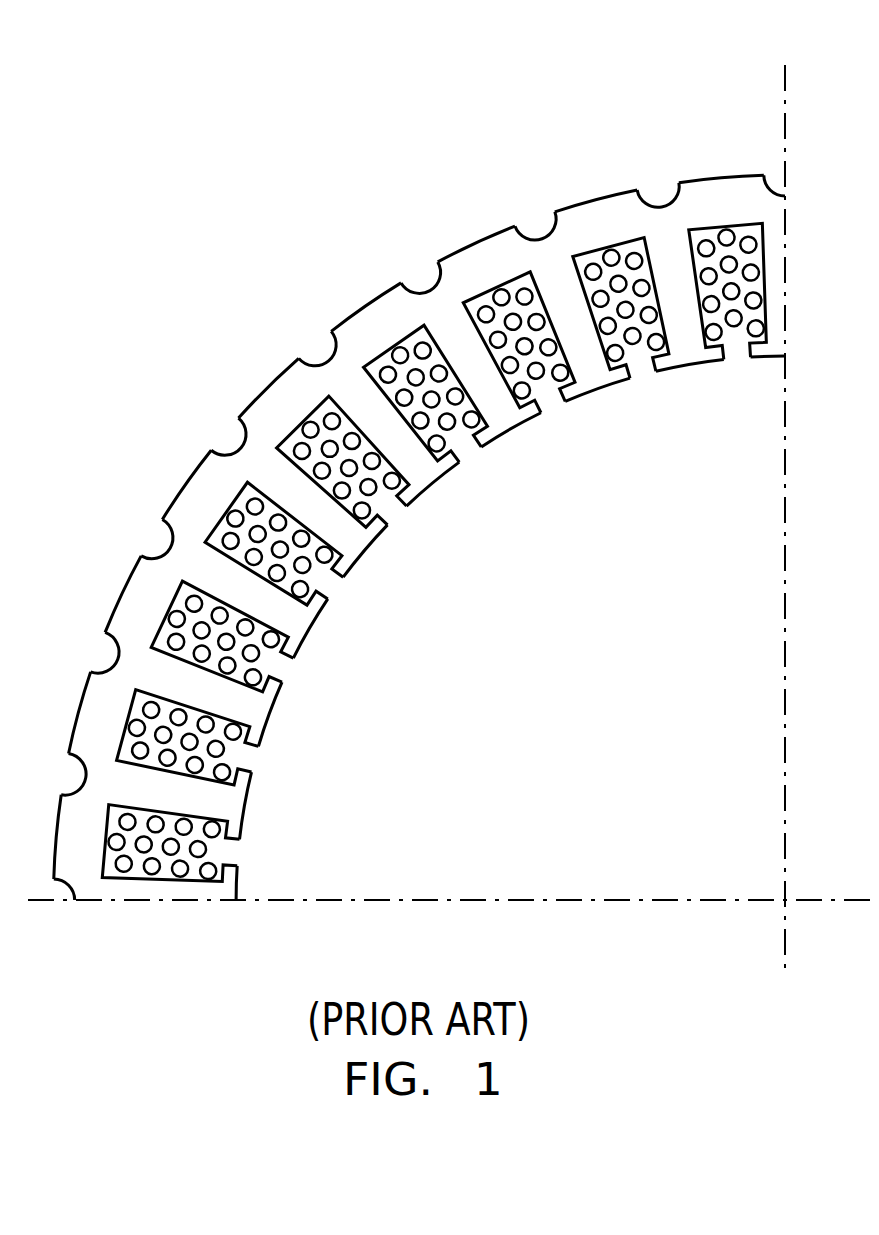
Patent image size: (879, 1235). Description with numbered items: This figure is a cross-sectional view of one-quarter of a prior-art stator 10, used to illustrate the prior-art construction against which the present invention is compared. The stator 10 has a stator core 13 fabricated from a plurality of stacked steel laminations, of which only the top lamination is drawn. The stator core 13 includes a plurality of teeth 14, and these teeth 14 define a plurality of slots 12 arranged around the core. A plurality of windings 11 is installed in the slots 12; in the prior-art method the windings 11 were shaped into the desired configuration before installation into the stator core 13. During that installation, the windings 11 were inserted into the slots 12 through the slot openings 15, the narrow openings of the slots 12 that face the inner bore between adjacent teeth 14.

The stator 10 is at (249, 200).
The windings 11 is at (703, 247).
The slots 12 is at (512, 273).
The stator core 13 is at (371, 312).
The teeth 14 is at (333, 518).
The slot openings 15 is at (467, 452).